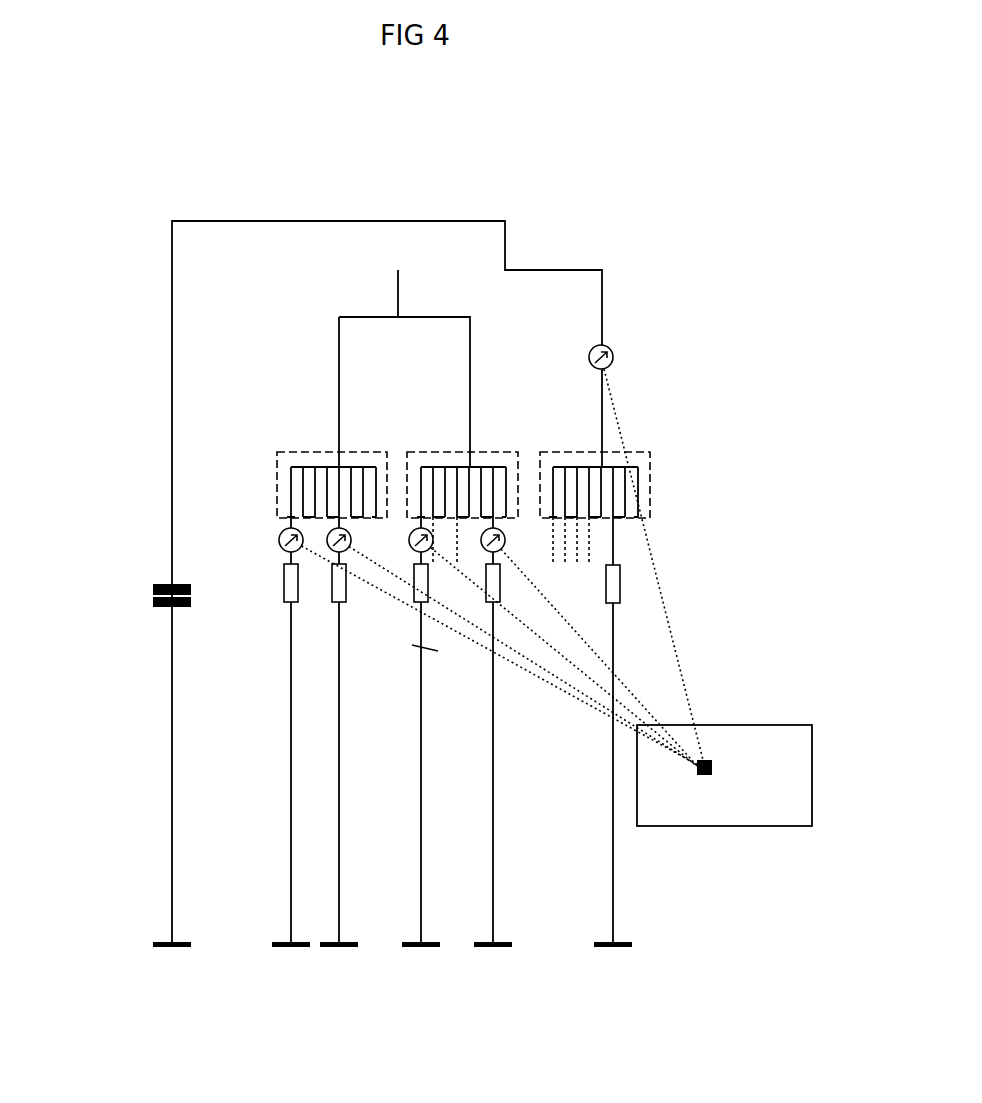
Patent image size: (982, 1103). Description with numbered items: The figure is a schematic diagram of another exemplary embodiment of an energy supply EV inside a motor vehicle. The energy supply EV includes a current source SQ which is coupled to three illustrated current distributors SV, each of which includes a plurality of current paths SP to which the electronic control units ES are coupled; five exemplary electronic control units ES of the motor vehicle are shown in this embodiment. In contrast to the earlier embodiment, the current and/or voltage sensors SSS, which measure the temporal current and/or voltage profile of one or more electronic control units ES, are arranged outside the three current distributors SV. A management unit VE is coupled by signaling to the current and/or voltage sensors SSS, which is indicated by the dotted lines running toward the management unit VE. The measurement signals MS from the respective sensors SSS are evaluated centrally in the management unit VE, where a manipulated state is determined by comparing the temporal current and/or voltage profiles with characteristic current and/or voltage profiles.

The energy supply EV is at (727, 208).
The current source SQ is at (137, 632).
The current distributor SV is at (297, 452).
The current path SP is at (638, 480).
The current and/or voltage sensor SSS is at (613, 351).
The electronic control unit ES is at (287, 603).
The measurement signal MS is at (675, 650).
The management unit VE is at (693, 817).